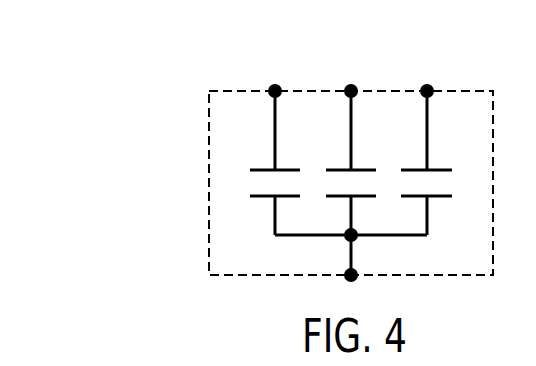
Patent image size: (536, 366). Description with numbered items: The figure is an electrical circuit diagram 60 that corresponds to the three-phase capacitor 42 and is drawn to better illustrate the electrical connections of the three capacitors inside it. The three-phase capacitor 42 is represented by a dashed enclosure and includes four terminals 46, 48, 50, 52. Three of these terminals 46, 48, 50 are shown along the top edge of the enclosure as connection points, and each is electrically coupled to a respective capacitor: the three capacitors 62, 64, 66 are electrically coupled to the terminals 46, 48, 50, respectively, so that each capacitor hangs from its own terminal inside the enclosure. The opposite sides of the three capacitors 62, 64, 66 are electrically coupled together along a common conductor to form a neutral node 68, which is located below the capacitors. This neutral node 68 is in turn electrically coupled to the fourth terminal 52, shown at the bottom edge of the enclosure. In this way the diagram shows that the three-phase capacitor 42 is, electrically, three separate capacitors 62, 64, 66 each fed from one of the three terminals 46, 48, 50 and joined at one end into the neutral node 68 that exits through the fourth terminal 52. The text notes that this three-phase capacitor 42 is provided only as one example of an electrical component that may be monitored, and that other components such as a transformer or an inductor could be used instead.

The electrical circuit diagram 60 is at (113, 45).
The three-phase capacitor 42 is at (467, 90).
The terminal 46 is at (270, 88).
The terminal 48 is at (345, 88).
The terminal 50 is at (421, 88).
The capacitor 62 is at (262, 170).
The capacitor 64 is at (338, 170).
The capacitor 66 is at (412, 170).
The neutral node 68 is at (342, 242).
The fourth terminal 52 is at (359, 280).